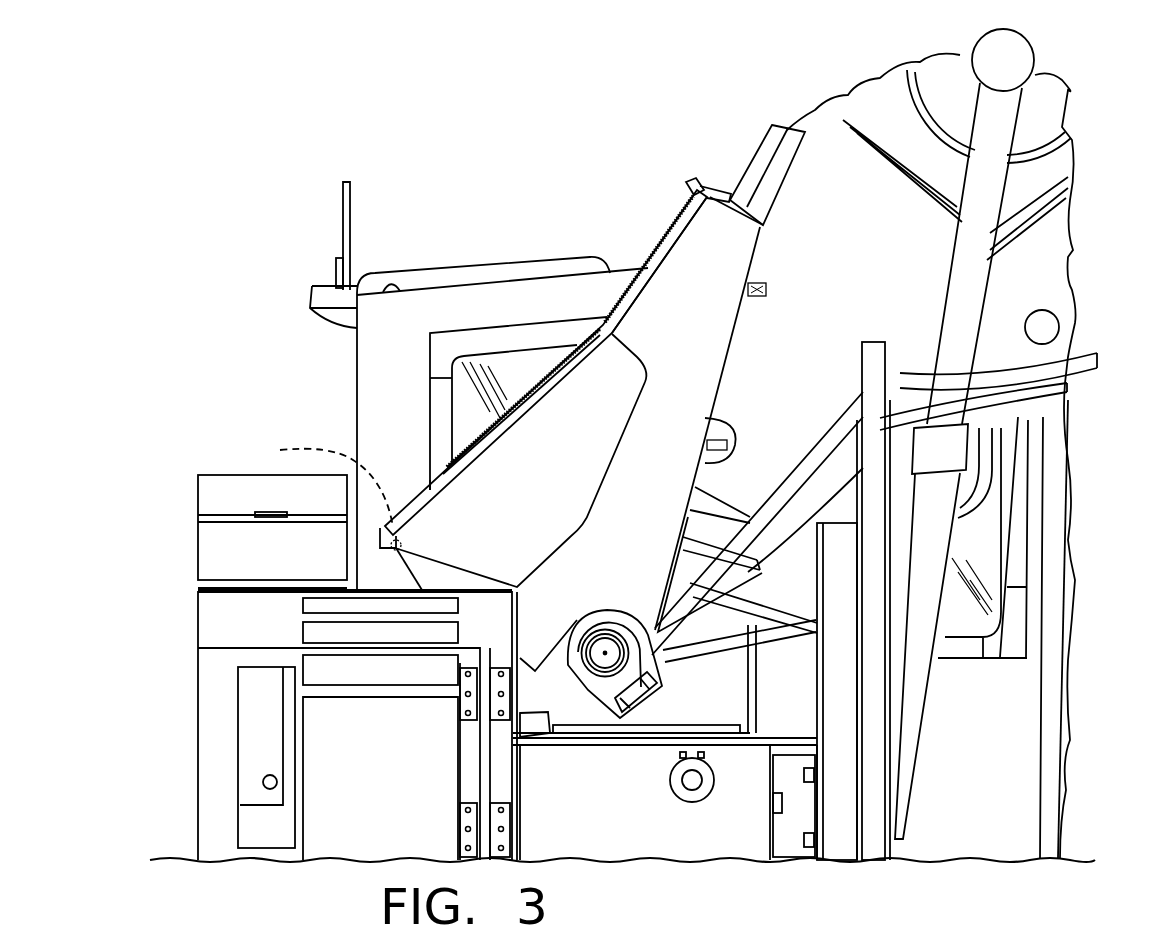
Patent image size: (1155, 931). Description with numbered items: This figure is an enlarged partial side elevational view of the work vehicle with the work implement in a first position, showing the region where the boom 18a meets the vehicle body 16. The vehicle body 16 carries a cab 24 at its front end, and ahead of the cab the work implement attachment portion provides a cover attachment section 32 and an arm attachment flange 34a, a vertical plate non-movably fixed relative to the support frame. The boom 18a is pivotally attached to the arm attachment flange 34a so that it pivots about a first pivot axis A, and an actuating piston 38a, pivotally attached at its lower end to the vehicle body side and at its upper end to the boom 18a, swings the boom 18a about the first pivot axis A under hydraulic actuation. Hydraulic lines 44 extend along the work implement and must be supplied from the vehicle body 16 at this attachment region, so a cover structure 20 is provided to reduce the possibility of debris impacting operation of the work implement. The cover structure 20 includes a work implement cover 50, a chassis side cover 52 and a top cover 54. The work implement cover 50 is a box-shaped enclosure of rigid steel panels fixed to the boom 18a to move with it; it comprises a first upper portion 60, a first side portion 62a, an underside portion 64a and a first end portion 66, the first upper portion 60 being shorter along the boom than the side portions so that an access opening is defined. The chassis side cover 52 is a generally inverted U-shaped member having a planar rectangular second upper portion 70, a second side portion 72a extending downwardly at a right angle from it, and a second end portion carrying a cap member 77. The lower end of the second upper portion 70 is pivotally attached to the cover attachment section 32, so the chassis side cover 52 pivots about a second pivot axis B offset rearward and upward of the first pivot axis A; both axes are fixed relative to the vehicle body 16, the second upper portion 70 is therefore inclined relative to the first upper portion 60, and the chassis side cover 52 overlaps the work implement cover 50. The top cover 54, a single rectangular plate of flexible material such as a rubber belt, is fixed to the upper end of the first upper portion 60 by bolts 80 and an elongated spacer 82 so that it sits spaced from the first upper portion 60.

The vehicle body 16 is at (197, 512).
The cover attachment section 32 is at (400, 578).
The cab 24 is at (443, 265).
The cover structure 20 is at (627, 258).
The chassis side cover 52 is at (436, 482).
The second upper portion 70 is at (427, 480).
The cap member 77 is at (432, 484).
The second pivot axis B is at (327, 480).
The first upper portion 60 is at (660, 214).
The top cover 54 is at (668, 212).
The bolts 80 is at (685, 186).
The elongated spacer 82 is at (712, 188).
The hydraulic lines 44 is at (765, 130).
The first end portion 66 is at (763, 220).
The work implement cover 50 is at (688, 320).
The first side portion 62a is at (700, 357).
The underside portion 64a is at (700, 462).
The second side portion 72a is at (535, 512).
The arm attachment flange 34a is at (648, 712).
The first pivot axis A is at (605, 656).
The boom 18a is at (867, 93).
The actuating piston 38a is at (925, 552).